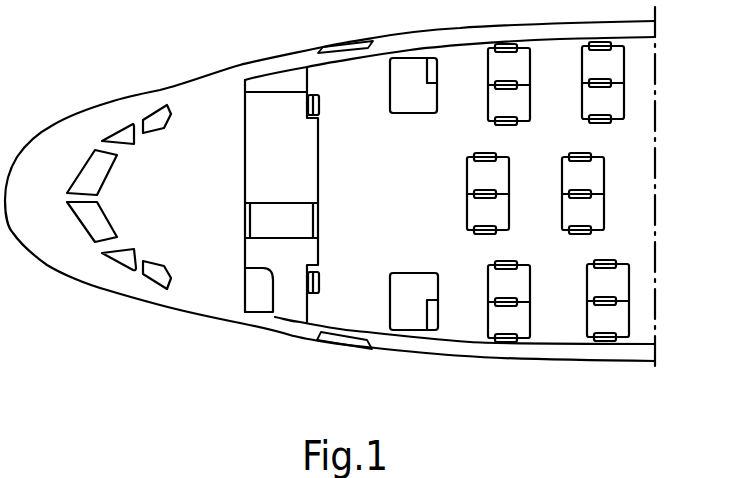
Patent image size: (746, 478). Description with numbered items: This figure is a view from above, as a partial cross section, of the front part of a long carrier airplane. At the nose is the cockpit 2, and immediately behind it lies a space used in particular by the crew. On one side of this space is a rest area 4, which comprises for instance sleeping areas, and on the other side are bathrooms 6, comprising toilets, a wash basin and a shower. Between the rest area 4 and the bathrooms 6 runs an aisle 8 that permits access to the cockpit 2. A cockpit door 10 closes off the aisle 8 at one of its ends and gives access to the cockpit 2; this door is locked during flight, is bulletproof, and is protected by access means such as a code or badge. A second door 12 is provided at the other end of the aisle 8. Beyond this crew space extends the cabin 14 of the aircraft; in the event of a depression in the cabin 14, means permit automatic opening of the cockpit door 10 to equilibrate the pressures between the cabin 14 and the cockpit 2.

The cockpit 2 is at (194, 173).
The rest area 4 is at (267, 110).
The bathrooms 6 is at (290, 305).
The aisle 8 is at (285, 213).
The cockpit door 10 is at (245, 222).
The second door 12 is at (318, 213).
The cabin 14 is at (638, 172).